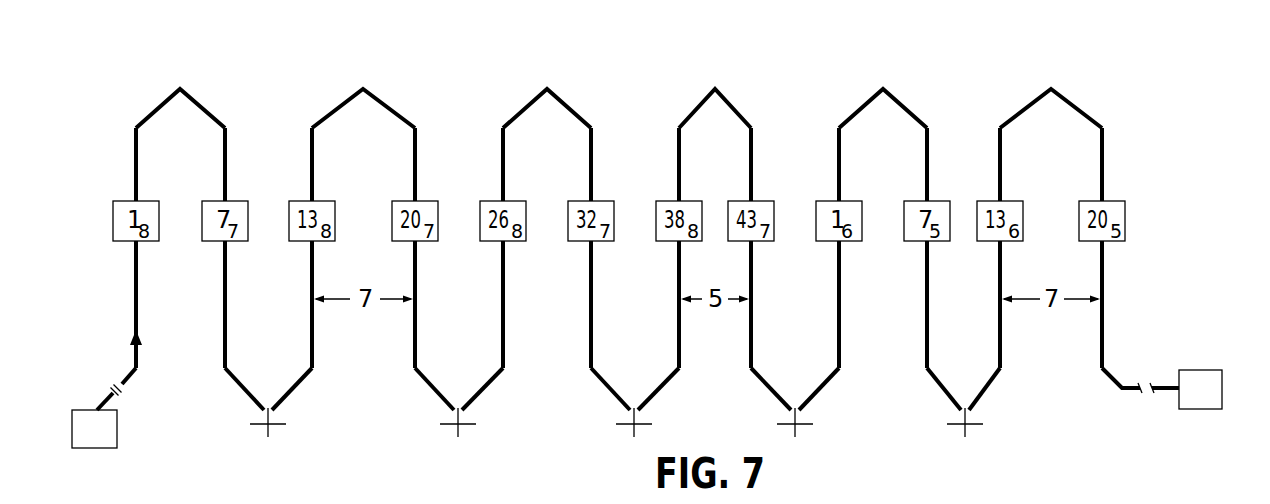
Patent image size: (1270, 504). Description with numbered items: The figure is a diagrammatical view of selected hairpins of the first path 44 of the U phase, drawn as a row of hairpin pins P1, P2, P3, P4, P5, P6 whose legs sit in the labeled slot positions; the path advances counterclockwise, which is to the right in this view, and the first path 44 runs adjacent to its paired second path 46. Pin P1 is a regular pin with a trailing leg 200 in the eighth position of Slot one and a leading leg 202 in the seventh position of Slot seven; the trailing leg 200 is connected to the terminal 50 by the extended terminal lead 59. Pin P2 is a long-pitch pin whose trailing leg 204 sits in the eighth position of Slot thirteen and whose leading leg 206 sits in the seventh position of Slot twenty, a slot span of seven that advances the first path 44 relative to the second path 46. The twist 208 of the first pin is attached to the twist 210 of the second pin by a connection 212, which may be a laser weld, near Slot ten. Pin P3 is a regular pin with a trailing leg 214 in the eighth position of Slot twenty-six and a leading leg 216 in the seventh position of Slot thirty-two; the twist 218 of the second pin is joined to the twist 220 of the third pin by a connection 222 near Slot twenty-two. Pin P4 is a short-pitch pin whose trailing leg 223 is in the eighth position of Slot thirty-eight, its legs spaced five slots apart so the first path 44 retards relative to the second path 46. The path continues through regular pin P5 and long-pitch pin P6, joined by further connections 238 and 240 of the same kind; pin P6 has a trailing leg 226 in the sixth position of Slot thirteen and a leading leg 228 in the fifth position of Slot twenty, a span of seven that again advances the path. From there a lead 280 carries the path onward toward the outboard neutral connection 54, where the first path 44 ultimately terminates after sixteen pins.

The first path 44 is at (1148, 83).
The second path 46 is at (1139, 493).
The terminal 50 is at (78, 410).
The outboard neutral connection 54 is at (1200, 370).
The terminal lead 59 is at (112, 396).
The trailing leg 200 is at (134, 308).
The leading leg 202 is at (227, 356).
The trailing leg 204 is at (310, 308).
The leading leg 206 is at (419, 357).
The twist 208 is at (242, 392).
The twist 210 is at (306, 381).
The connection 212 is at (284, 450).
The trailing leg 214 is at (506, 312).
The leading leg 216 is at (594, 356).
The twist 218 is at (440, 405).
The twist 220 is at (497, 381).
The connection 222 is at (481, 451).
The trailing leg 223 is at (678, 289).
The trailing leg 226 is at (1003, 362).
The leading leg 228 is at (1104, 352).
The end segment 238 is at (977, 408).
The weld joint 240 is at (981, 451).
The neutral connection segment 280 is at (1108, 376).
The pole pair 1 P1 is at (163, 72).
The pole pair 2 P2 is at (347, 72).
The pole pair 3 P3 is at (531, 72).
The pole pair 4 P4 is at (699, 72).
The pole pair 5 P5 is at (867, 72).
The pole pair 6 P6 is at (1035, 72).